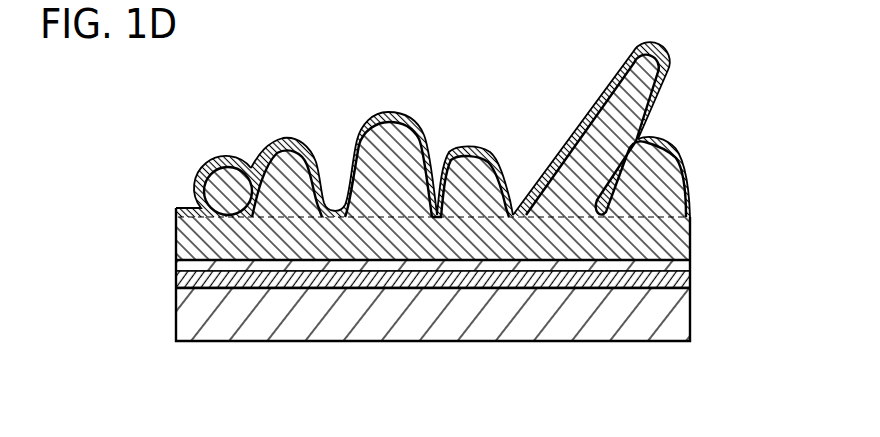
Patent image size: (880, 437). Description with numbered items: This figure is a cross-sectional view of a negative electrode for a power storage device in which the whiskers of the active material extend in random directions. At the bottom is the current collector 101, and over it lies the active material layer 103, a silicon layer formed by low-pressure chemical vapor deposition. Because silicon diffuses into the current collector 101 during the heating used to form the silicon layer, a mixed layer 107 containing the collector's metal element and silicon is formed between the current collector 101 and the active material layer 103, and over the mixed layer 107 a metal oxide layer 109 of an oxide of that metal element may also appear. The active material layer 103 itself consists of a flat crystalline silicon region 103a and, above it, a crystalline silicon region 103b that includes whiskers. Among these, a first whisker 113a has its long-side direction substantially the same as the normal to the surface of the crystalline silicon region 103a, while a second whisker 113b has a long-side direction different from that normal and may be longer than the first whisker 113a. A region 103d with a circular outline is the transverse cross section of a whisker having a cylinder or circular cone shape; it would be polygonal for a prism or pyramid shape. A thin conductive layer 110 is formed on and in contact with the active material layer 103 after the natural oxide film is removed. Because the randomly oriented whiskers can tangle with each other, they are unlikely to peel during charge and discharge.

The current collector 101 is at (433, 315).
The active material layer 103 is at (483, 225).
The crystalline silicon region 103a is at (705, 220).
The crystalline silicon region including a whisker 103b is at (483, 127).
The region 103d is at (222, 186).
The mixed layer 107 is at (500, 278).
The metal oxide layer 109 is at (580, 265).
The conductive layer 110 is at (287, 137).
The first whisker 113a is at (373, 158).
The second whisker 113b is at (620, 92).